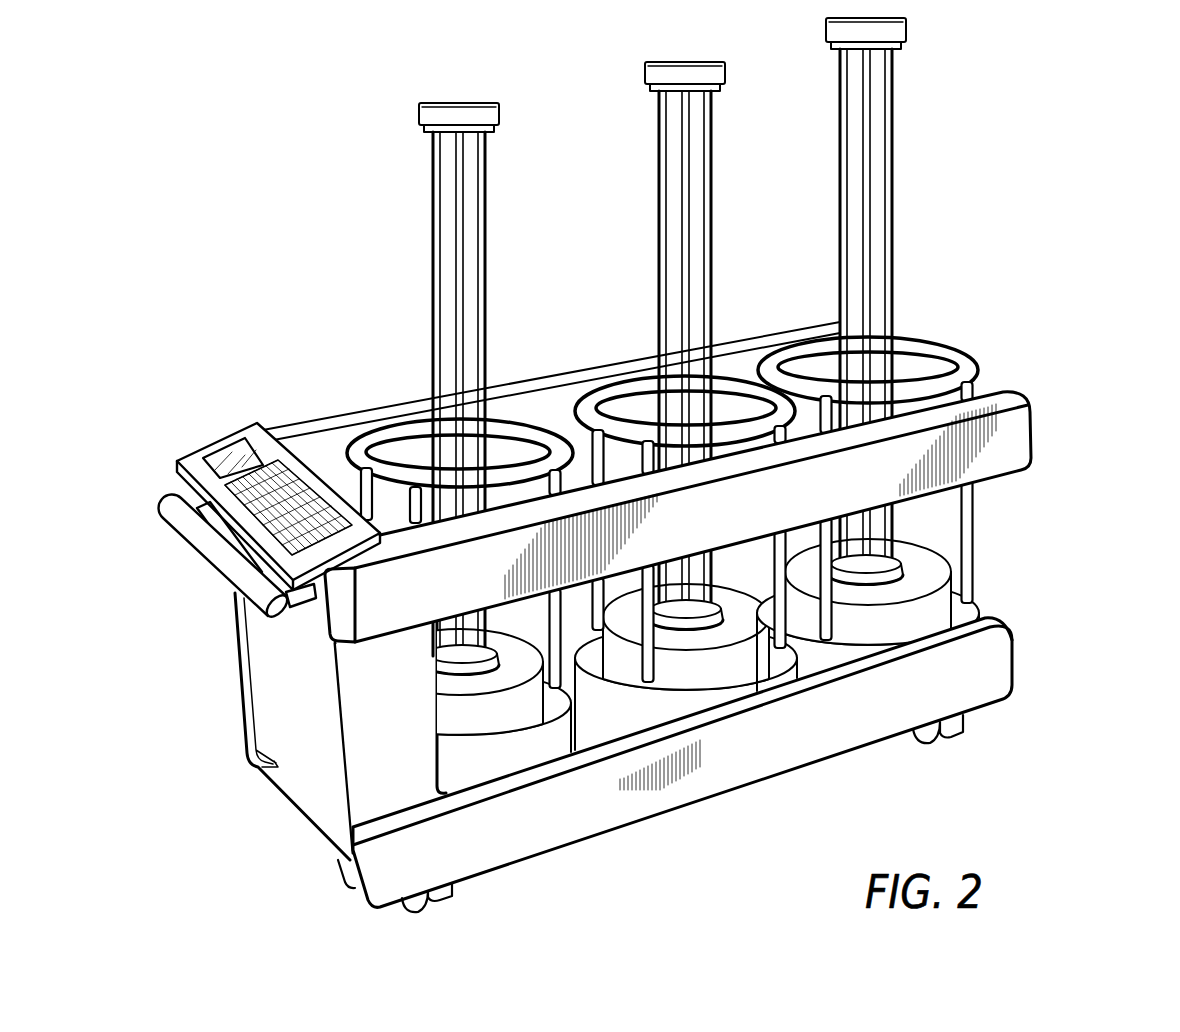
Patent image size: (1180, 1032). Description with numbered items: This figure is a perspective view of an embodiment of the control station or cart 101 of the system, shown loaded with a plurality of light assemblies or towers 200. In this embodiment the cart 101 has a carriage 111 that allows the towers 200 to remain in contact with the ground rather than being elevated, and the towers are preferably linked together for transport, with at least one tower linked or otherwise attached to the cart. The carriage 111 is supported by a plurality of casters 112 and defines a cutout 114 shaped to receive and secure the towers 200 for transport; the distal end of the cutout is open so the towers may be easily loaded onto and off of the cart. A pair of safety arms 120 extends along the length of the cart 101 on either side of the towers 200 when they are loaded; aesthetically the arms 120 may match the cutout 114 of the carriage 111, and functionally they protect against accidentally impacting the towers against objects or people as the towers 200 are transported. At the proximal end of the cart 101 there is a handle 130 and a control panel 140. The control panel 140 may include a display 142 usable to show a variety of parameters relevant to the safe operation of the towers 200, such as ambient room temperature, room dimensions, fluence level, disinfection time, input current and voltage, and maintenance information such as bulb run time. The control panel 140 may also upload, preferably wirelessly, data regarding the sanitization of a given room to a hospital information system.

The cart 101 is at (684, 572).
The carriage 111 is at (675, 763).
The casters 112 is at (705, 828).
The cutout 114 is at (758, 535).
The safety arms 120 is at (724, 517).
The handle 130 is at (209, 558).
The control panel 140 is at (231, 469).
The display 142 is at (277, 451).
The light assemblies or towers 200 is at (676, 385).